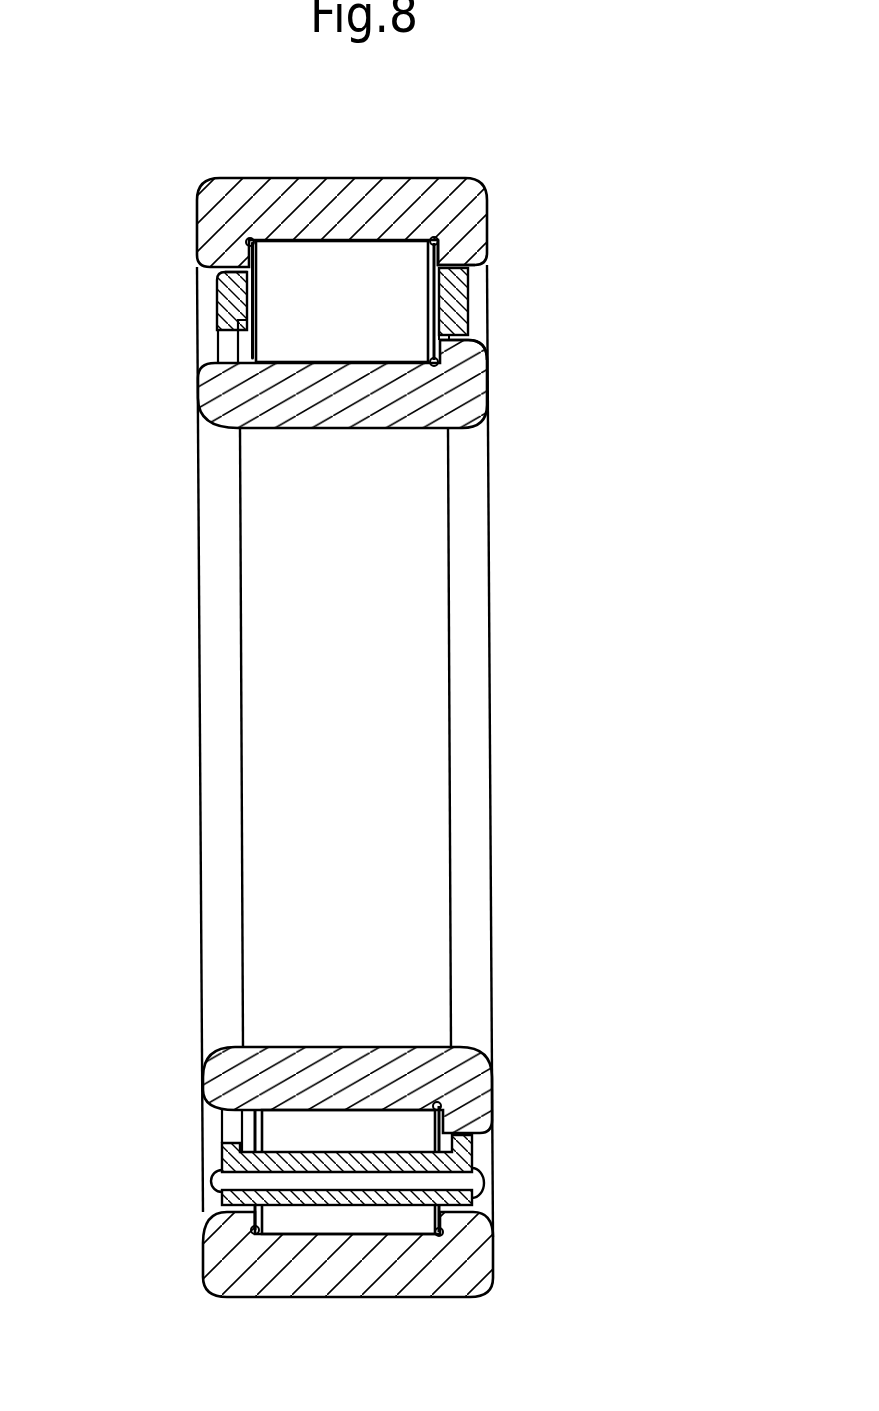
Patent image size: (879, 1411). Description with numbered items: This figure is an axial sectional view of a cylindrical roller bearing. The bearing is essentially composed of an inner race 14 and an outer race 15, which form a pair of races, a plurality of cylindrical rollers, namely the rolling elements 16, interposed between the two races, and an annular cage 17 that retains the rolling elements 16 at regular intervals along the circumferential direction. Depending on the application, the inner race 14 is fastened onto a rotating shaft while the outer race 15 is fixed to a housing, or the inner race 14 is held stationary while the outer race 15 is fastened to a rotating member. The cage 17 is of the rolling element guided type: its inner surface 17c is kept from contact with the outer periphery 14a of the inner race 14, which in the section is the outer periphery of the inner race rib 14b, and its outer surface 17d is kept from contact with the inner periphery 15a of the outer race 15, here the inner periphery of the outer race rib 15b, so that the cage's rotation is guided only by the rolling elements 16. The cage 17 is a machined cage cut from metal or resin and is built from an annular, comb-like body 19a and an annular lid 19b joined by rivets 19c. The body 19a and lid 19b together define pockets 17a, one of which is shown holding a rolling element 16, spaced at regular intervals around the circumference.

The inner race 14 is at (207, 393).
The outer periphery of the inner race 14a is at (470, 333).
The inner race rib 14b is at (465, 352).
The outer race 15 is at (389, 190).
The inner periphery of the outer race 15a is at (468, 290).
The outer race rib 15b is at (470, 250).
The rolling element 16 is at (308, 262).
The cage 17 is at (215, 300).
The pocket 17a is at (253, 303).
The inner surface of the cage 17c is at (218, 345).
The outer surface of the cage 17d is at (232, 270).
The body 19a is at (230, 1148).
The lid 19b is at (474, 1142).
The rivet 19c is at (333, 1182).